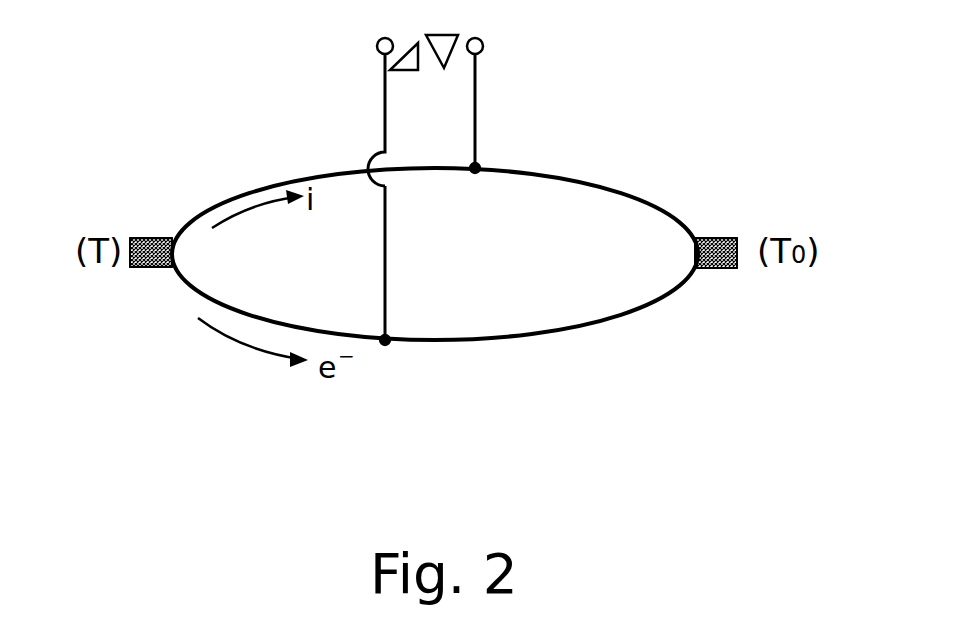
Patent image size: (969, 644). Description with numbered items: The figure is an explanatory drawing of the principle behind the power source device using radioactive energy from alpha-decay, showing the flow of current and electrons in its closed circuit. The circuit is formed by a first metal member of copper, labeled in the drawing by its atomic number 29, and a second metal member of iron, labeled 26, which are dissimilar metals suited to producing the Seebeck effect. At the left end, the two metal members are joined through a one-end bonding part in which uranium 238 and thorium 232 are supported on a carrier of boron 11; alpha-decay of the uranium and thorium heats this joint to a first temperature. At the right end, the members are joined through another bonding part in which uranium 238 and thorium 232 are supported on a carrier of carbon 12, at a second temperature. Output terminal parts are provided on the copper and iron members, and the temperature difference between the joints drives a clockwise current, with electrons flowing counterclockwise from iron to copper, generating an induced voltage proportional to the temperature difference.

The iron (Fe) ring conductor 26 is at (305, 178).
The copper (Cu) conductor 29 is at (407, 345).
The uranium-238 electrode block 238 is at (777, 135).
The thorium-232 electrode block 232 is at (780, 348).
The boron-11 junction 11 is at (153, 267).
The carbon-12 junction 12 is at (713, 268).